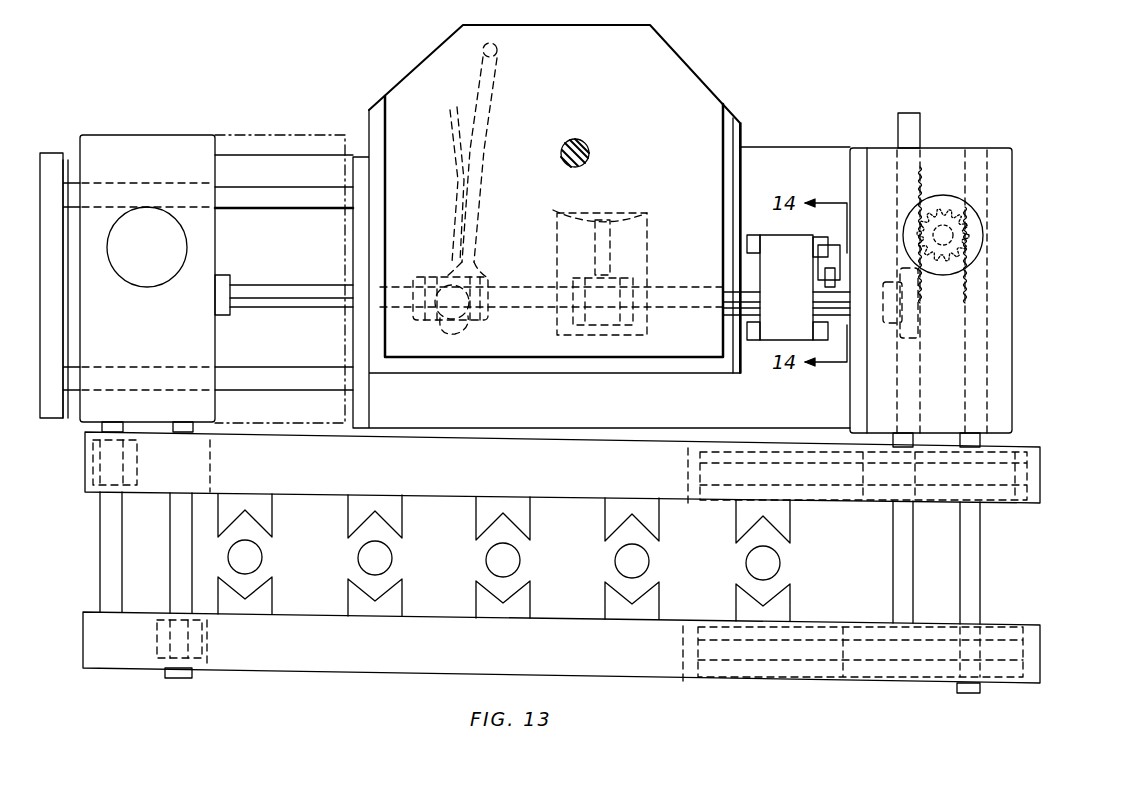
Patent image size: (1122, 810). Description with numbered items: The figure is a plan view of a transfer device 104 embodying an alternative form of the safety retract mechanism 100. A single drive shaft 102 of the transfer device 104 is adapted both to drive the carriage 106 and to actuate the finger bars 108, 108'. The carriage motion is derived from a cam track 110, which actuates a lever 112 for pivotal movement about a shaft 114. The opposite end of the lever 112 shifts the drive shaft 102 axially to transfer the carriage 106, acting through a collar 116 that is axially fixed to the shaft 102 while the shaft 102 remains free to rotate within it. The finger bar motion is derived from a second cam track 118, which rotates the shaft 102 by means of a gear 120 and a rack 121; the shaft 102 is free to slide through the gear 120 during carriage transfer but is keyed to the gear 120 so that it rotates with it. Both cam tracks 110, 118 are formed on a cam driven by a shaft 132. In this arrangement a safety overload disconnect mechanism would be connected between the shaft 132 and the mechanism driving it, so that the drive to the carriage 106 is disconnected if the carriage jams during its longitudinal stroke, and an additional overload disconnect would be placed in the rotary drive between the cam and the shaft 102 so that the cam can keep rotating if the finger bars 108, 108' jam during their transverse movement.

The safety retract mechanism 100 is at (782, 268).
The drive shaft 102 is at (528, 290).
The transfer device 104 is at (1020, 378).
The carriage 106 is at (155, 163).
The finger bar 108 is at (504, 534).
The finger bar 108' is at (504, 603).
The cam track 110 is at (483, 173).
The lever 112 is at (487, 107).
The shaft 114 is at (497, 52).
The collar 116 is at (473, 330).
The cam track 118 is at (647, 217).
The gear 120 is at (622, 314).
The rack 121 is at (600, 265).
The shaft 132 is at (584, 146).